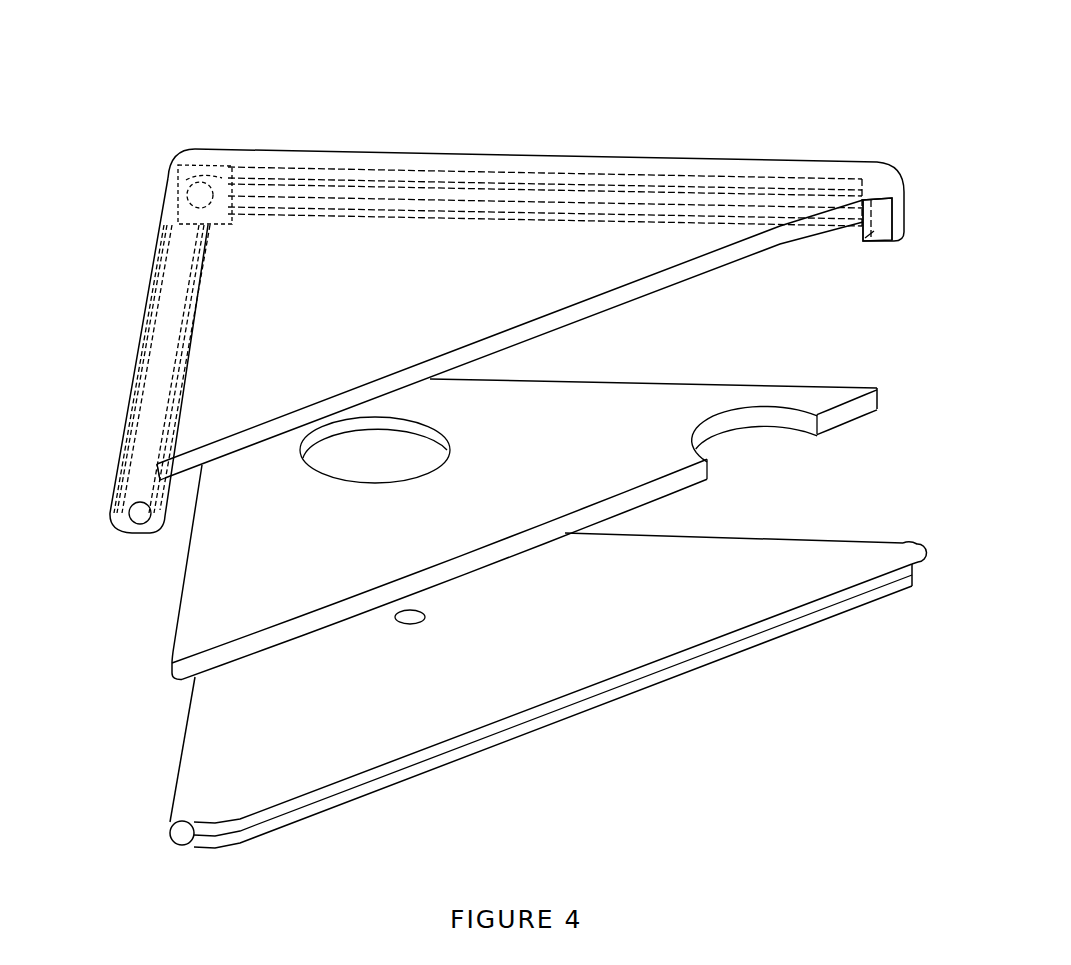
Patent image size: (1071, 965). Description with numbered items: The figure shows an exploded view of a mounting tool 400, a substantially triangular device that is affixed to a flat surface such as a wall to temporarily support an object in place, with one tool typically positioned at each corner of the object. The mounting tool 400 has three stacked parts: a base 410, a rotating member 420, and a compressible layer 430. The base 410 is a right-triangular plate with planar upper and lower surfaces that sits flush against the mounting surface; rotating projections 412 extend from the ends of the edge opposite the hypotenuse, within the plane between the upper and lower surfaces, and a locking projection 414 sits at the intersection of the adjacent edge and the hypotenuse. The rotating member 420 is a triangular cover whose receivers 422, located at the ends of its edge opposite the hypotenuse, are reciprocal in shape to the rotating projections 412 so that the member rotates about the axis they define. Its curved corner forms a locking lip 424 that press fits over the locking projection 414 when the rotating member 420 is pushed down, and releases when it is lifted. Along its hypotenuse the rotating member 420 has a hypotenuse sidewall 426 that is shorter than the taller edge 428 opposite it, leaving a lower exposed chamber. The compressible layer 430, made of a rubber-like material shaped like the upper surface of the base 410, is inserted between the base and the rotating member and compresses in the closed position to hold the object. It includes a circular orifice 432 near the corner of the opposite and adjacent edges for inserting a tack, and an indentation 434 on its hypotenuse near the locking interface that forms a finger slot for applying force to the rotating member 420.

The mounting tool 400 is at (164, 106).
The base 410 is at (565, 662).
The rotating projections 412 is at (183, 836).
The locking projection 414 is at (911, 545).
The rotating member 420 is at (397, 213).
The receivers 422 is at (196, 194).
The locking lip 424 is at (866, 214).
The hypotenuse sidewall 426 is at (193, 466).
The edge opposite the sidewall 428 is at (180, 283).
The compressible layer 430 is at (616, 396).
The circular orifice 432 is at (420, 452).
The indentation 434 is at (730, 432).